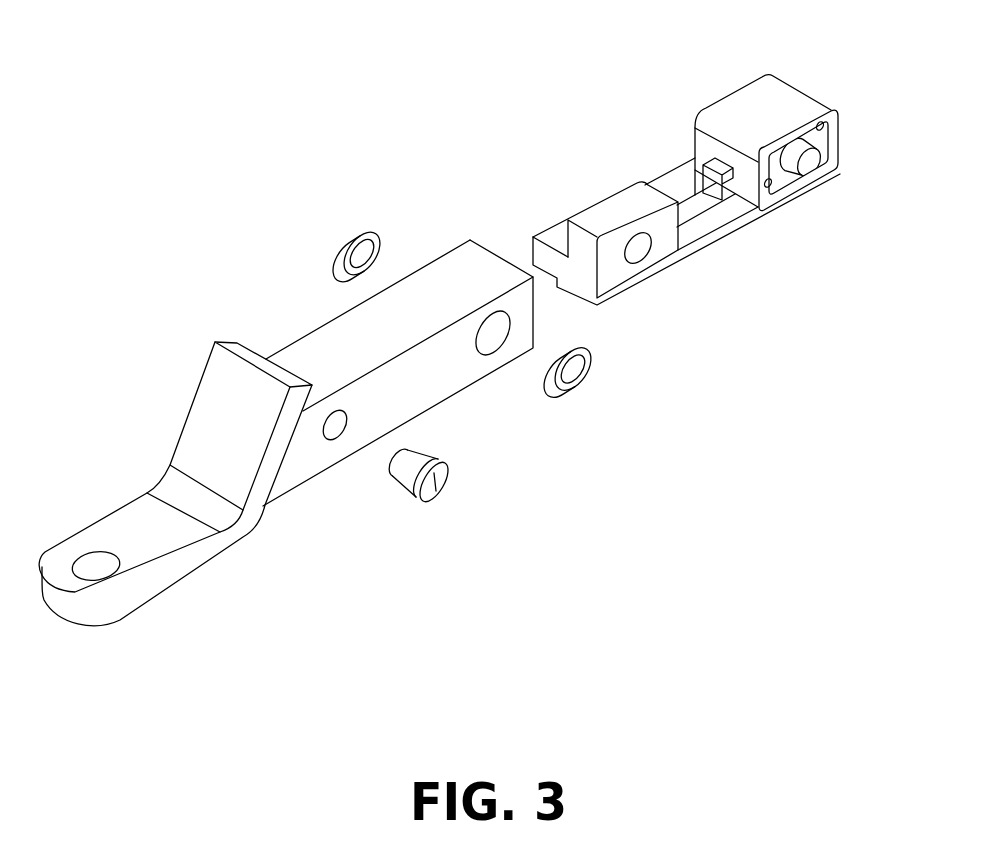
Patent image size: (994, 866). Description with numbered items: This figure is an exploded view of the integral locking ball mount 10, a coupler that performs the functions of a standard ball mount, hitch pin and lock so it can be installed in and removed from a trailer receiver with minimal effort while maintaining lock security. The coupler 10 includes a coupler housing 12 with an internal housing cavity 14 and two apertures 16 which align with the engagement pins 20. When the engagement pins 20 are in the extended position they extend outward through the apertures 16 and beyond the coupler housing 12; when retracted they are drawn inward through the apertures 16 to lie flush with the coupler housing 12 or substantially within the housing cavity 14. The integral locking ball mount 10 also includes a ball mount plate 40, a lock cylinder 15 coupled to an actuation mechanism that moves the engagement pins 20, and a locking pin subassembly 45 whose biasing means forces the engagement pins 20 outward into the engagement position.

The integral locking ball mount 10 is at (662, 492).
The coupler housing 12 is at (398, 410).
The housing cavity 14 is at (533, 320).
The lock cylinder 15 is at (433, 502).
The apertures 16 is at (493, 343).
The engagement pins 20 is at (729, 163).
The ball mount plate 40 is at (173, 593).
The locking pin subassembly 45 is at (733, 101).